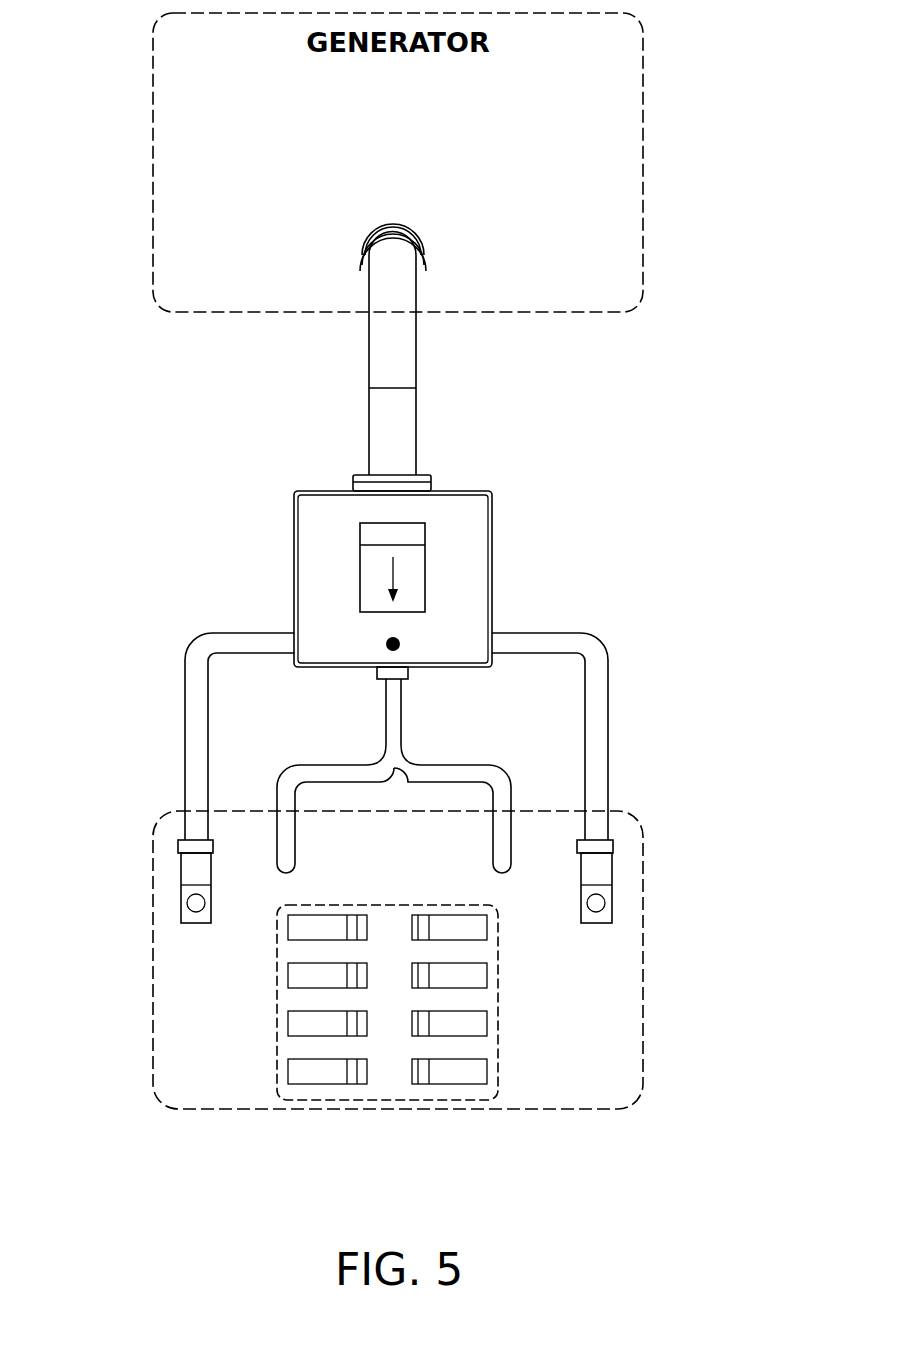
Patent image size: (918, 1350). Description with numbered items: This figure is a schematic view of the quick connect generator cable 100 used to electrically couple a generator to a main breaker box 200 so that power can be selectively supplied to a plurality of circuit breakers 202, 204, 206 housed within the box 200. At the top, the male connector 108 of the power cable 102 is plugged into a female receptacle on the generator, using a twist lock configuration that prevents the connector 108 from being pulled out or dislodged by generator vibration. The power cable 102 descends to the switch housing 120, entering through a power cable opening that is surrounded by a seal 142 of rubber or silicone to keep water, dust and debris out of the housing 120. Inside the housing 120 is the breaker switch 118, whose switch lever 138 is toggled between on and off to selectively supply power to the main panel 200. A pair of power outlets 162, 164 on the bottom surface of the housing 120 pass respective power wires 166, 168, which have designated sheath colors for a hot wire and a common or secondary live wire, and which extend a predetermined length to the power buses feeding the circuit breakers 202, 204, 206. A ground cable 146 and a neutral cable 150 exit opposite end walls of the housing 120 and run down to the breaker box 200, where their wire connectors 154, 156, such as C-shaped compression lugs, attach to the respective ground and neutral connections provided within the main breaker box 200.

The quick connect generator cable 100 is at (226, 408).
The power cable 102 is at (408, 328).
The male connector 108 is at (362, 255).
The breaker switch 118 is at (373, 582).
The switch housing 120 is at (403, 568).
The switch lever 138 is at (370, 540).
The seal 142 is at (428, 484).
The ground cable 146 is at (610, 687).
The neutral cable 150 is at (182, 705).
The wire connector 154 is at (612, 872).
The wire connector 156 is at (180, 873).
The power outlet 162 is at (408, 673).
The power outlet 164 is at (472, 710).
The power wire 166 is at (313, 763).
The power wire 168 is at (470, 763).
The main breaker box 200 is at (459, 990).
The circuit breaker 202 is at (305, 1075).
The circuit breaker 204 is at (448, 1075).
The circuit breaker 206 is at (490, 1022).